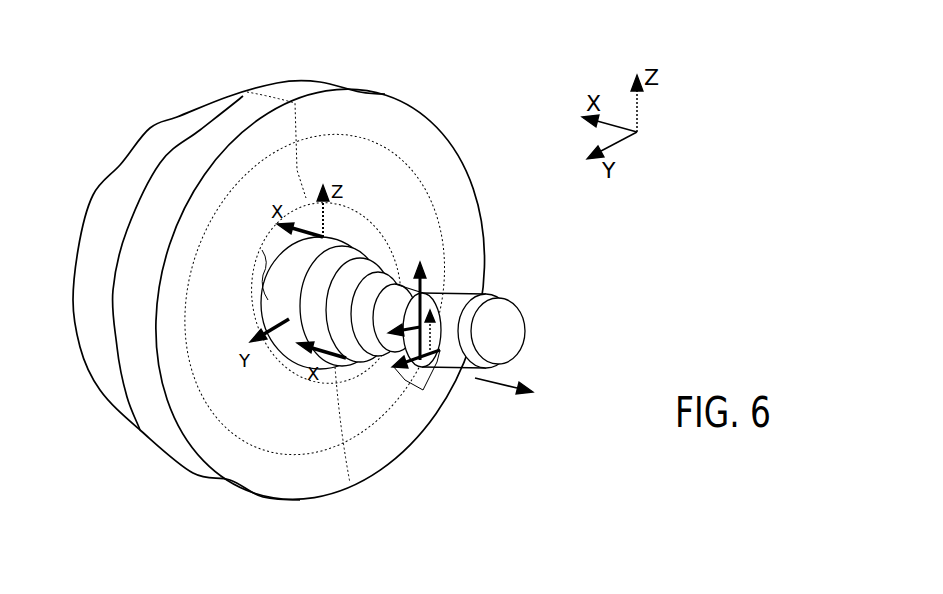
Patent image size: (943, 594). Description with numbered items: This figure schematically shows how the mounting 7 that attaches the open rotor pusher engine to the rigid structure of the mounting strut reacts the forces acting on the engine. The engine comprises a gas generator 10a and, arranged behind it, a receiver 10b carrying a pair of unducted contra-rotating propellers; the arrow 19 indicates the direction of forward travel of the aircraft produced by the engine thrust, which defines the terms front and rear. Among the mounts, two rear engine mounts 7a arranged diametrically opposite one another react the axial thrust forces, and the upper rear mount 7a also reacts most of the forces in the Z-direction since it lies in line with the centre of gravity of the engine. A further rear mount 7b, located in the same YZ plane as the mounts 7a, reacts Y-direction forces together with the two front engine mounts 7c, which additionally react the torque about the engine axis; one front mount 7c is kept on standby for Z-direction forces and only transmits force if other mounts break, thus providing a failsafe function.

The mounting 7 is at (236, 419).
The rear engine mounts 7a is at (337, 238).
The rear mount 7b is at (290, 318).
The front engine mounts 7c is at (437, 352).
The gas generator 10a is at (444, 365).
The receiver 10b is at (159, 115).
The arrow 19 is at (495, 383).